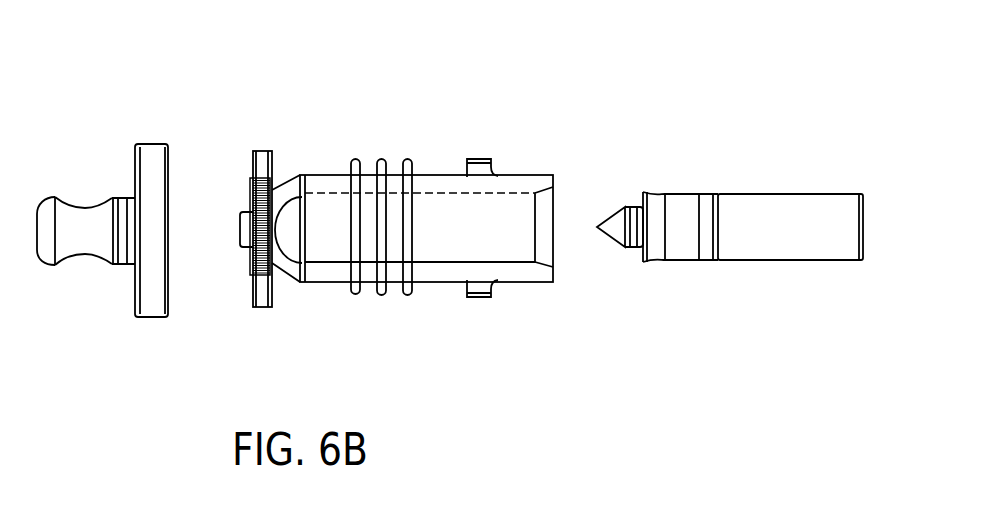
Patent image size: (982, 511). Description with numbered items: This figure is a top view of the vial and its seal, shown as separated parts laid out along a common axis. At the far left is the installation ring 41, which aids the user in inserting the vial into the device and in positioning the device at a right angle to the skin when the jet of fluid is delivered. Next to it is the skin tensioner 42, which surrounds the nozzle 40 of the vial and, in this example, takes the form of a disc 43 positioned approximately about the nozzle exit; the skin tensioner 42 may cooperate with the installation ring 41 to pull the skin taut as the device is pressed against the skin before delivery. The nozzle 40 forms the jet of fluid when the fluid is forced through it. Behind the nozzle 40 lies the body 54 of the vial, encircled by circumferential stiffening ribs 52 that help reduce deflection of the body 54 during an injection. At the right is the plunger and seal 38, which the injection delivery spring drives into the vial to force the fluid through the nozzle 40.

The plunger and seal 38 is at (780, 255).
The nozzle 40 is at (240, 210).
The installation ring 41 is at (148, 308).
The skin tensioner 42 is at (240, 228).
The disc 43 is at (273, 153).
The circumferential stiffening ribs 52 is at (353, 167).
The body 54 is at (443, 170).